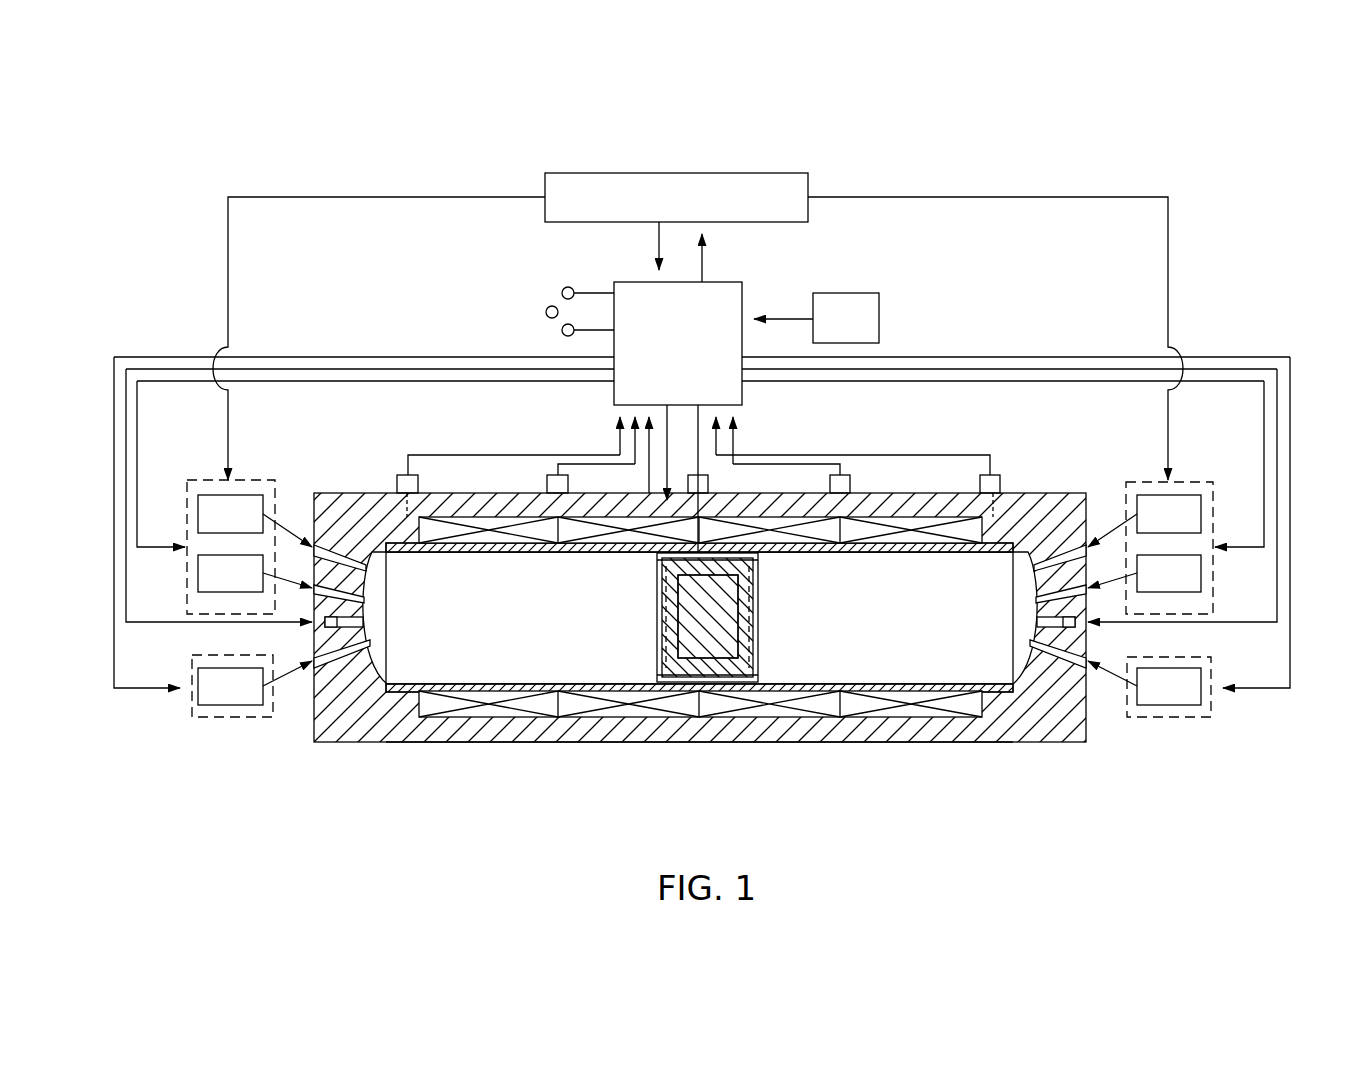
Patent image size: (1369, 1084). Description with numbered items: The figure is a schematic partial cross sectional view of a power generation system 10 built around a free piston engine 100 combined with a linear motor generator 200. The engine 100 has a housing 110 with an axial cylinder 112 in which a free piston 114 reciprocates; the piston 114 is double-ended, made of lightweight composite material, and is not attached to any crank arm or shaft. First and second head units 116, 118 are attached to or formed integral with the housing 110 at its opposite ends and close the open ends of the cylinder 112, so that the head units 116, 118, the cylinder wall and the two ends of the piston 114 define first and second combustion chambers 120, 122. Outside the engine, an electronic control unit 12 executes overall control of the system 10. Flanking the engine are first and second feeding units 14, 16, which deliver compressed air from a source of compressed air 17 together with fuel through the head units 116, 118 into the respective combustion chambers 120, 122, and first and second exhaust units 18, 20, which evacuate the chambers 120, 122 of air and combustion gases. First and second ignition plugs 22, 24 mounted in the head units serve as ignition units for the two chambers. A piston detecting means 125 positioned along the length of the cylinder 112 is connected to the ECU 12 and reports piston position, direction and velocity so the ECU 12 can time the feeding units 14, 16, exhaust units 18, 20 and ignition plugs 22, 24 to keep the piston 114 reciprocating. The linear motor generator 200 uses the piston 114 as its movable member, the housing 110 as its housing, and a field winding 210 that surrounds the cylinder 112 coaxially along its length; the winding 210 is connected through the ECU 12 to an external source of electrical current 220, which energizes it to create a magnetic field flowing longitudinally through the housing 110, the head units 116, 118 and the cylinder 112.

The power generation system 10 is at (1105, 162).
The electronic control unit 12 is at (728, 308).
The first feeding unit 14 is at (187, 529).
The second feeding unit 16 is at (1217, 511).
The source of compressed air 17 is at (580, 180).
The first exhaust unit 18 is at (250, 728).
The second exhaust unit 20 is at (1181, 729).
The first ignition plug 22 is at (335, 632).
The second ignition plug 24 is at (1060, 632).
The free piston engine 100 is at (588, 767).
The housing 110 is at (773, 735).
The cylinder 112 is at (882, 687).
The free piston 114 is at (700, 680).
The first head unit 116 is at (344, 640).
The second head unit 118 is at (1039, 740).
The first combustion chamber 120 is at (440, 652).
The second combustion chamber 122 is at (940, 652).
The piston detecting means 125 is at (545, 443).
The linear motor generator 200 is at (925, 467).
The field winding 210 is at (495, 704).
The external source of electrical current 220 is at (868, 322).